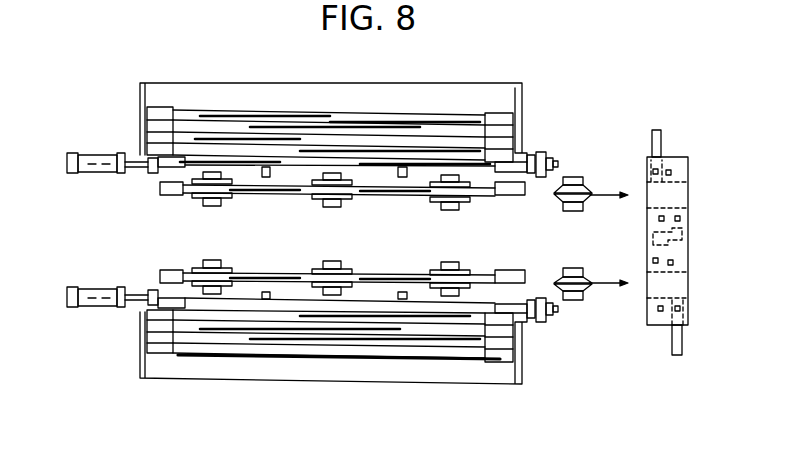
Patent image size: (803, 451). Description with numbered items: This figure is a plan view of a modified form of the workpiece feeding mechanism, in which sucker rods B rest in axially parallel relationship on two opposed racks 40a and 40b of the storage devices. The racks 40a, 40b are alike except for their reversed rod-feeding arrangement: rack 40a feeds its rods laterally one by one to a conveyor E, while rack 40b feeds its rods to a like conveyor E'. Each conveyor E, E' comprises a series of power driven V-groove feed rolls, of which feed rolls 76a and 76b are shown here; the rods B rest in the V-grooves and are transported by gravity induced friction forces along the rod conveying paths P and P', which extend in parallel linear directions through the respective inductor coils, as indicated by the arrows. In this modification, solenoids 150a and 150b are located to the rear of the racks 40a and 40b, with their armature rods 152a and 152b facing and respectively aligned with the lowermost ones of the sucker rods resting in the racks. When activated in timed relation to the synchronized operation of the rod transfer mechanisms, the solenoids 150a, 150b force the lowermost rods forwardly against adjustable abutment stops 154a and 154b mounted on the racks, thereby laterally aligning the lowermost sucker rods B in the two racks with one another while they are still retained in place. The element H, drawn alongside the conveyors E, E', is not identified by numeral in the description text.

The rack 40a is at (291, 82).
The rack 40b is at (291, 382).
The solenoid 150a is at (97, 162).
The solenoid 150b is at (95, 298).
The armature rod 152a is at (138, 170).
The armature rod 152b is at (135, 295).
The adjustable abutment stop 154a is at (540, 182).
The adjustable abutment stop 154b is at (540, 298).
The V-groove feed roll 76a is at (588, 188).
The V-groove feed roll 76b is at (589, 296).
The conveyor E is at (574, 145).
The conveyor E' is at (574, 333).
The rod conveying path P is at (609, 184).
The rod conveying path P' is at (609, 272).
The housing strip H is at (692, 178).
The sucker rod B is at (357, 108).